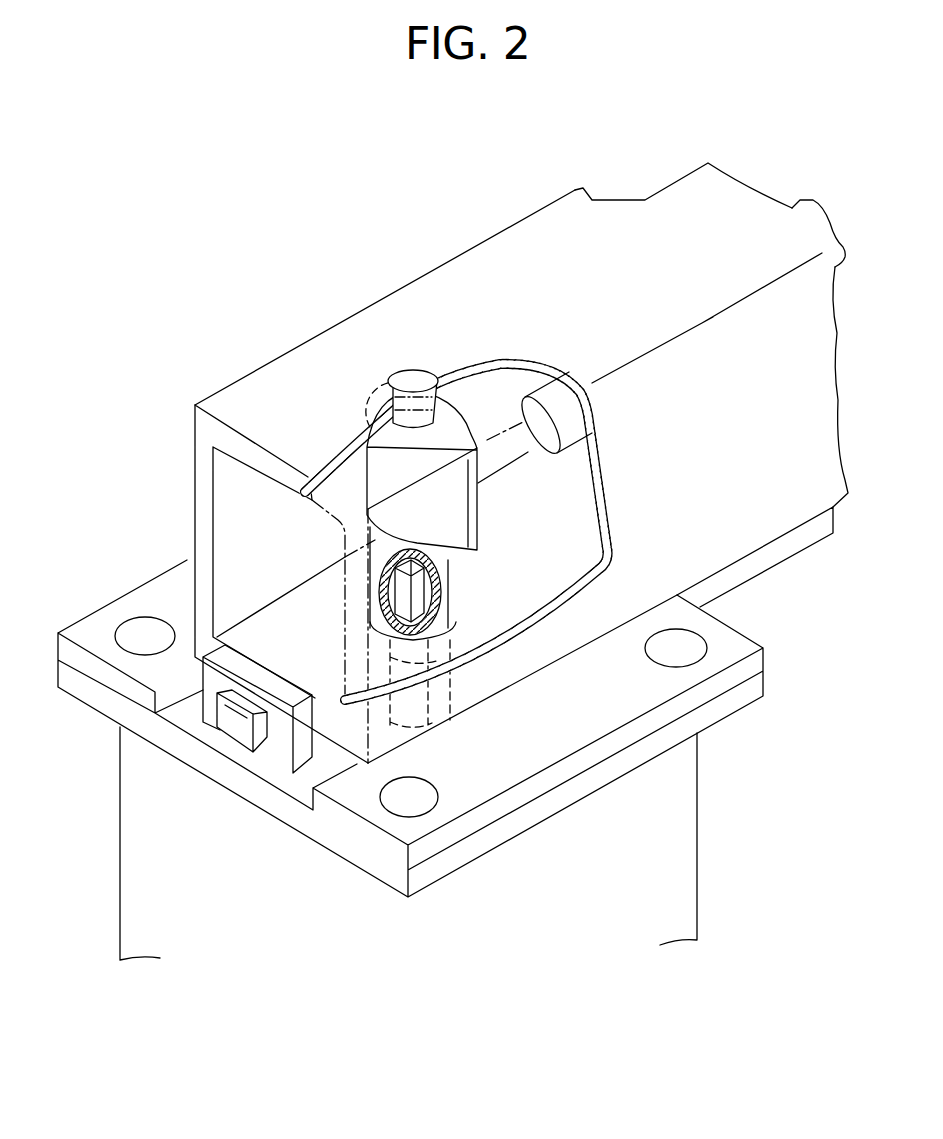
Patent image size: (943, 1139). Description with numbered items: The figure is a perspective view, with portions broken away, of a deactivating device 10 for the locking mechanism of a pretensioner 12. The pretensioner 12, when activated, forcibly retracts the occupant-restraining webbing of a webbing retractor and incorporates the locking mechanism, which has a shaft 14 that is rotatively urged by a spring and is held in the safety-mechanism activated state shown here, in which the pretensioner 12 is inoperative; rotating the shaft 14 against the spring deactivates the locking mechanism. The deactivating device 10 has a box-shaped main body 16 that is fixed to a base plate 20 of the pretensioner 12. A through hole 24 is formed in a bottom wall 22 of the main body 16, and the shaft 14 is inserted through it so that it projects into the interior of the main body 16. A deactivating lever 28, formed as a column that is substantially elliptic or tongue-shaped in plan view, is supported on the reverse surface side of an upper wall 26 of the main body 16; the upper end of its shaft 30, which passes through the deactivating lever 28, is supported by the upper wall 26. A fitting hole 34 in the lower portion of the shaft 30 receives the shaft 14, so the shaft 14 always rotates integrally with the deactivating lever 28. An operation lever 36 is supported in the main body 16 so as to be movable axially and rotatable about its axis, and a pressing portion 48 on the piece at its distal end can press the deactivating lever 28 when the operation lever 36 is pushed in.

The deactivating device 10 is at (402, 270).
The pretensioner 12 is at (113, 795).
The shaft 14 is at (452, 606).
The main body 16 is at (190, 495).
The base plate 20 is at (58, 640).
The bottom wall 22 is at (540, 575).
The through hole 24 is at (458, 608).
The upper wall 26 is at (300, 387).
The deactivating lever 28 is at (460, 510).
The shaft 30 is at (413, 387).
The fitting hole 34 is at (410, 698).
The operation lever 36 is at (792, 207).
The pressing portion 48 is at (557, 457).